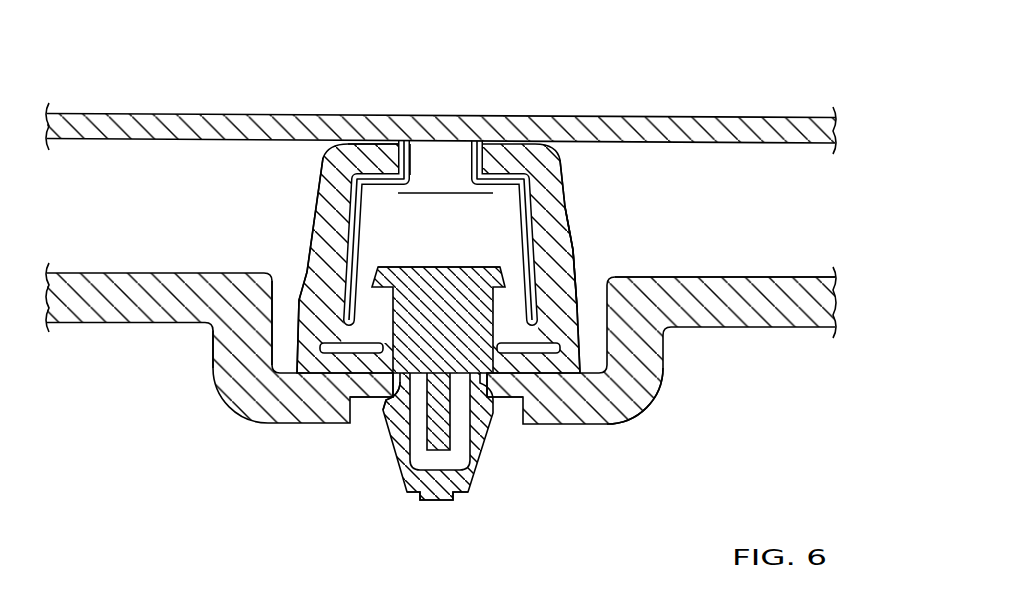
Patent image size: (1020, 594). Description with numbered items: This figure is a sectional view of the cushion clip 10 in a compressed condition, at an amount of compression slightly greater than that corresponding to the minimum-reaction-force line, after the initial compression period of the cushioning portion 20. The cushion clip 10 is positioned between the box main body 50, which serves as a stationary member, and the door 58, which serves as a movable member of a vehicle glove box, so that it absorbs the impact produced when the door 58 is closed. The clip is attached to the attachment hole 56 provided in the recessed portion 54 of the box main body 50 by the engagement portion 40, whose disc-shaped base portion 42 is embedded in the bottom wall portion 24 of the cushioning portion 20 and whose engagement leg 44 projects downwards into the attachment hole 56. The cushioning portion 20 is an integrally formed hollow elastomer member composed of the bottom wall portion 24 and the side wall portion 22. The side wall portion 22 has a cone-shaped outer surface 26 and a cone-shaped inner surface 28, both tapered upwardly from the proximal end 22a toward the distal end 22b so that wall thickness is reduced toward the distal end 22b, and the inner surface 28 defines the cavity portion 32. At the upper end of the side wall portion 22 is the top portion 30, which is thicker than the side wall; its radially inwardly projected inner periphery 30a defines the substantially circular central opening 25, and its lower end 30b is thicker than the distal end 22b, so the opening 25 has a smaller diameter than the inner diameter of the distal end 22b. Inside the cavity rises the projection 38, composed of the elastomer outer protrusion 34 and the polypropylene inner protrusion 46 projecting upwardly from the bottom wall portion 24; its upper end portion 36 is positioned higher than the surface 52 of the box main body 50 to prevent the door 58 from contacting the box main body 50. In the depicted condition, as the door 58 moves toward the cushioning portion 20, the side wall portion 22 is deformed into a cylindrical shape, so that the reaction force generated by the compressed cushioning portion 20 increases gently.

The cushion clip 10 is at (572, 165).
The cushioning portion 20 is at (570, 190).
The side wall portion 22 is at (335, 213).
The proximal end of the side wall portion 22a is at (553, 313).
The distal end of the side wall portion 22b is at (523, 193).
The bottom wall portion 24 is at (340, 338).
The central opening 25 is at (430, 162).
The outer surface 26 is at (574, 235).
The inner surface 28 is at (576, 258).
The top portion 30 is at (360, 167).
The inner periphery of the top portion 30a is at (468, 157).
The lower end of the top portion 30b is at (503, 180).
The cavity portion 32 is at (358, 168).
The outer protrusion 34 is at (345, 237).
The upper end portion of the projection 36 is at (387, 303).
The projection 38 is at (403, 262).
The engagement portion 40 is at (493, 455).
The base portion 42 is at (603, 425).
The engagement leg 44 is at (408, 478).
The inner protrusion 46 is at (345, 303).
The box main body 50 is at (757, 322).
The surface of the box main body 52 is at (728, 277).
The recessed portion 54 is at (641, 412).
The attachment hole 56 is at (387, 408).
The door 58 is at (723, 122).